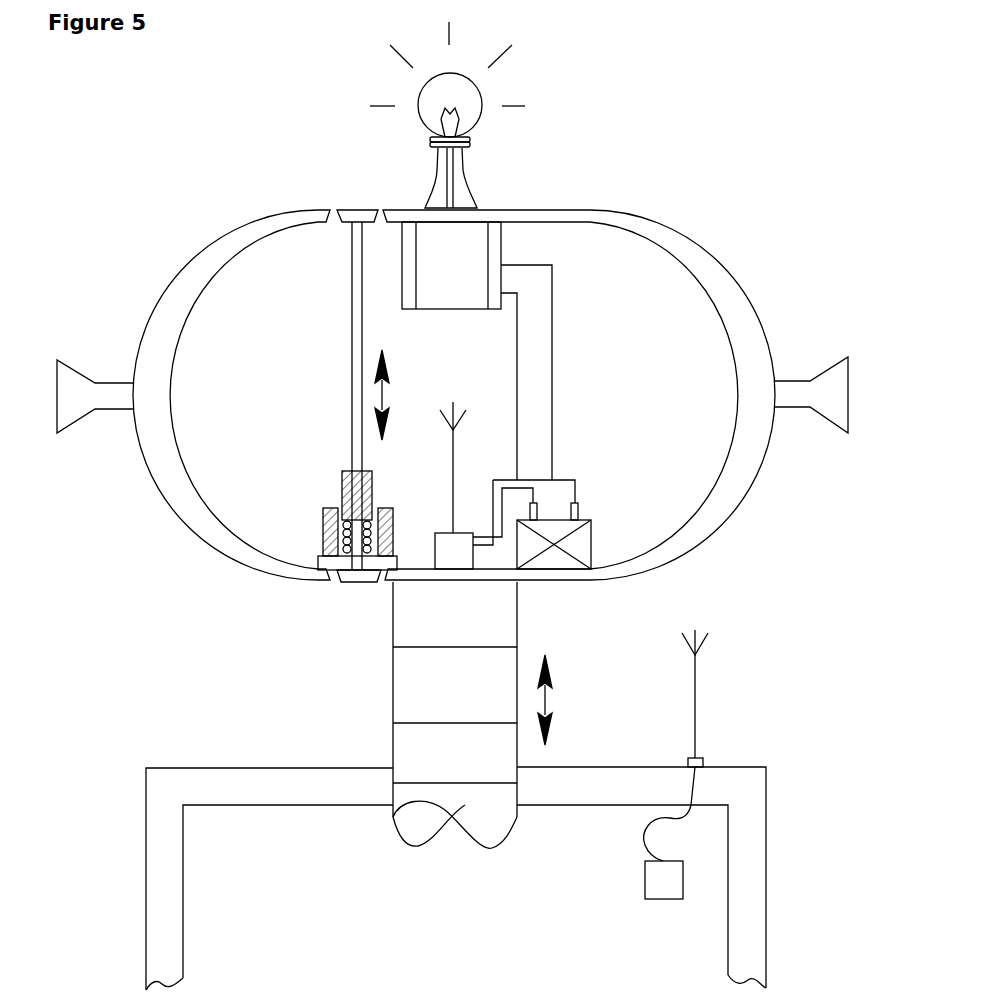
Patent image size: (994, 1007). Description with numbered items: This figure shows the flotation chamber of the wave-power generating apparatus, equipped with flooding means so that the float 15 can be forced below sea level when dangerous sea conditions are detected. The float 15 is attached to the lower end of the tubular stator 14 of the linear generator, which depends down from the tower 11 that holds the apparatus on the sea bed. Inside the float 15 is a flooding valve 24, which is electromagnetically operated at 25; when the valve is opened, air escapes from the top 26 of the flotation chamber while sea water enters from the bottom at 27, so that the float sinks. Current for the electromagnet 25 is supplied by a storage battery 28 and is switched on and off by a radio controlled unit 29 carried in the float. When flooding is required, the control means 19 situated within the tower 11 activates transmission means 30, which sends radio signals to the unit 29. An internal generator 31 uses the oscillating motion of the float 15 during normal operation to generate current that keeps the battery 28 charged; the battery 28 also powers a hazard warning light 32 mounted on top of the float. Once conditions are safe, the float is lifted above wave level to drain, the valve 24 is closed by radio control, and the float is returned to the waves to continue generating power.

The tower 11 is at (163, 845).
The stator 14 is at (393, 742).
The float 15 is at (237, 225).
The control means 19 is at (658, 883).
The flooding valve 24 is at (306, 396).
The electromagnet 25 is at (325, 530).
The top of flotation chamber 26 is at (352, 208).
The bottom of flotation chamber 27 is at (358, 582).
The storage battery 28 is at (560, 550).
The radio controlled unit 29 is at (472, 547).
The transmission means 30 is at (697, 692).
The internal generator 31 is at (490, 263).
The hazard warning light 32 is at (483, 106).